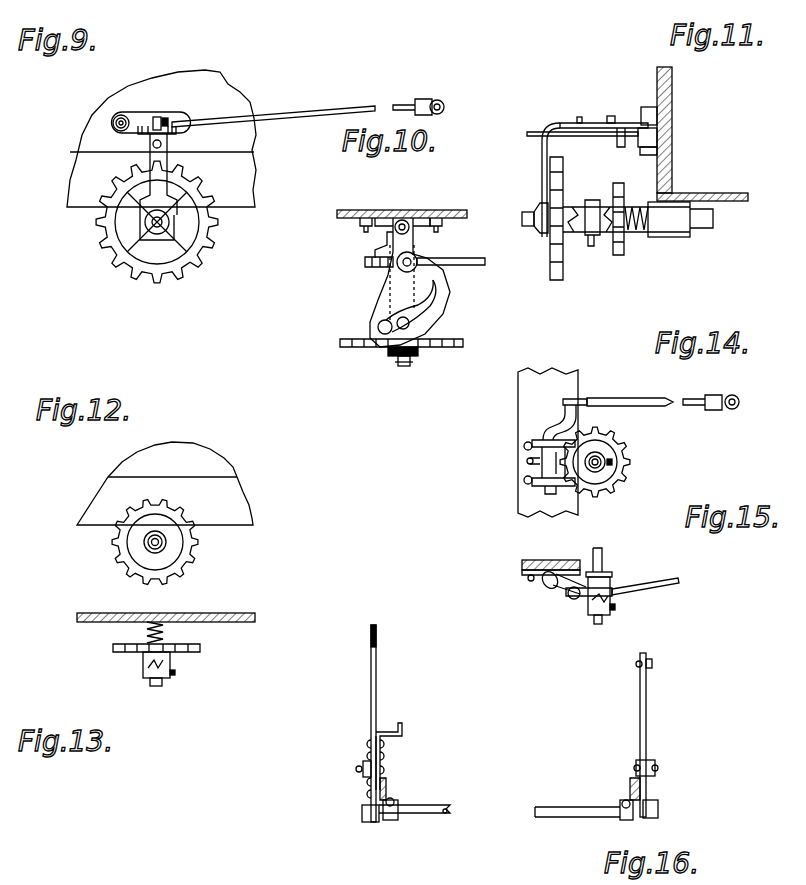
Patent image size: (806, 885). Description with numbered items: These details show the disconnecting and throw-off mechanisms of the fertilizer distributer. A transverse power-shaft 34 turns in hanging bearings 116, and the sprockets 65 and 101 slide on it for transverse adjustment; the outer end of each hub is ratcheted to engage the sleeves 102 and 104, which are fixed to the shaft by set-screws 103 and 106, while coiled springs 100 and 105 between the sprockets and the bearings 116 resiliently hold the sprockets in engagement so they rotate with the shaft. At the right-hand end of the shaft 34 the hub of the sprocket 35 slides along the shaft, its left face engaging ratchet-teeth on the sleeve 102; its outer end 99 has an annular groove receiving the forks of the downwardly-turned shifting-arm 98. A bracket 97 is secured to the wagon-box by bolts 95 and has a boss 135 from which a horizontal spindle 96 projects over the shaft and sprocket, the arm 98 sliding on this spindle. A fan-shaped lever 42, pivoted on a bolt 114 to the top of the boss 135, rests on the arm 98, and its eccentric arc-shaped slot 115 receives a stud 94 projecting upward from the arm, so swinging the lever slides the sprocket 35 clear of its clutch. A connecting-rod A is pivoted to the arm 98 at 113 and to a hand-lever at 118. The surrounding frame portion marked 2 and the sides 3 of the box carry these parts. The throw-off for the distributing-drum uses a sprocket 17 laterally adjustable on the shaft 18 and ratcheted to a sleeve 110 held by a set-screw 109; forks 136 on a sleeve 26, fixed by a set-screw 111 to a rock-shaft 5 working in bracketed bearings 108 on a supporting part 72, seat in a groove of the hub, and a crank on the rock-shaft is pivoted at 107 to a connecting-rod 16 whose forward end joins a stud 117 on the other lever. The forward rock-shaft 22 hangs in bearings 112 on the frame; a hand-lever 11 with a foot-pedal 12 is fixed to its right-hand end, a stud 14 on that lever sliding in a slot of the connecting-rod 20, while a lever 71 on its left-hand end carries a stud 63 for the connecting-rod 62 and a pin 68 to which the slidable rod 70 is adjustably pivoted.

In FIG. 9, the frame plate 2 is at (238, 170).
In FIG. 10, the frame plate 2 is at (344, 208).
In FIG. 11, the frame plate 2 is at (668, 102).
In FIG. 12, the sides 3 is at (213, 486).
In FIG. 13, the sides 3 is at (192, 613).
In FIG. 14, the rock-shaft 5 is at (562, 418).
In FIG. 15, the rock-shaft 5 is at (546, 583).
In FIG. 16, the hand-lever 11 is at (377, 640).
In FIG. 16, the foot-pedal 12 is at (403, 728).
In FIG. 16, the stud 14 is at (362, 770).
In FIG. 14, the connecting-rod 16 is at (636, 400).
In FIG. 15, the connecting-rod 16 is at (662, 585).
In FIG. 14, the sprocket 17 is at (600, 446).
In FIG. 15, the sprocket 17 is at (616, 593).
In FIG. 14, the shaft 18 is at (597, 466).
In FIG. 15, the shaft 18 is at (601, 562).
In FIG. 16, the connecting-rod 20 is at (368, 764).
In FIG. 16, the rock-shaft 22 is at (362, 820).
In FIG. 14, the sleeve 26 is at (545, 465).
In FIG. 9, the power-shaft 34 is at (152, 226).
In FIG. 10, the power-shaft 34 is at (403, 366).
In FIG. 11, the power-shaft 34 is at (527, 210).
In FIG. 12, the power-shaft 34 is at (150, 545).
In FIG. 13, the power-shaft 34 is at (154, 686).
In FIG. 9, the sprocket 35 is at (207, 212).
In FIG. 10, the sprocket 35 is at (455, 346).
In FIG. 11, the sprocket 35 is at (558, 280).
In FIG. 9, the fan-shaped lever 42 is at (148, 140).
In FIG. 10, the fan-shaped lever 42 is at (380, 312).
In FIG. 11, the fan-shaped lever 42 is at (566, 122).
In FIG. 16, the connecting-rod 62 is at (652, 762).
In FIG. 16, the stud 63 is at (657, 770).
In FIG. 12, the sprocket 65 is at (168, 527).
In FIG. 13, the sprocket 65 is at (202, 648).
In FIG. 16, the pin 68 is at (652, 665).
In FIG. 16, the rod 70 is at (648, 662).
In FIG. 16, the lever 71 is at (647, 712).
In FIG. 14, the frame wall 72 is at (548, 369).
In FIG. 15, the frame wall 72 is at (542, 562).
In FIG. 9, the stud 94 is at (157, 118).
In FIG. 10, the stud 94 is at (410, 325).
In FIG. 11, the stud 94 is at (580, 117).
In FIG. 9, the bolts 95 is at (116, 119).
In FIG. 10, the bolts 95 is at (444, 228).
In FIG. 9, the spindle 96 is at (153, 147).
In FIG. 10, the spindle 96 is at (414, 362).
In FIG. 11, the spindle 96 is at (530, 134).
In FIG. 9, the bracket 97 is at (140, 114).
In FIG. 10, the bracket 97 is at (422, 216).
In FIG. 9, the shifting-arm 98 is at (157, 175).
In FIG. 10, the shifting-arm 98 is at (390, 352).
In FIG. 11, the shifting-arm 98 is at (543, 128).
In FIG. 9, the outer end of hub 99 is at (146, 218).
In FIG. 11, the outer end of hub 99 is at (542, 234).
In FIG. 11, the coiled spring 100 is at (640, 234).
In FIG. 9, the sprocket 101 is at (190, 224).
In FIG. 10, the sprocket 101 is at (366, 270).
In FIG. 11, the sprocket 101 is at (622, 255).
In FIG. 11, the sleeve 102 is at (598, 238).
In FIG. 11, the set-screw 103 is at (590, 247).
In FIG. 12, the sleeve 104 is at (163, 544).
In FIG. 13, the sleeve 104 is at (142, 672).
In FIG. 13, the coiled spring 105 is at (166, 632).
In FIG. 13, the set-screw 106 is at (176, 672).
In FIG. 14, the pivot 107 is at (583, 398).
In FIG. 15, the pivot 107 is at (572, 597).
In FIG. 14, the bracketed bearings 108 is at (550, 442).
In FIG. 14, the set-screw 109 is at (612, 461).
In FIG. 15, the set-screw 109 is at (616, 608).
In FIG. 14, the sleeve 110 is at (605, 466).
In FIG. 15, the sleeve 110 is at (603, 619).
In FIG. 14, the set-screw 111 is at (530, 458).
In FIG. 16, the bearings 112 is at (396, 820).
In FIG. 9, the pivot 113 is at (165, 118).
In FIG. 10, the pivot 113 is at (415, 258).
In FIG. 11, the pivot 113 is at (611, 116).
In FIG. 10, the bolt 114 is at (405, 222).
In FIG. 11, the bolt 114 is at (648, 108).
In FIG. 10, the arc-shaped slot 115 is at (436, 292).
In FIG. 11, the hanging bearings 116 is at (672, 226).
In FIG. 14, the stud 117 is at (730, 396).
In FIG. 9, the pivot 118 is at (428, 99).
In FIG. 9, the boss 135 is at (178, 136).
In FIG. 10, the boss 135 is at (386, 240).
In FIG. 11, the boss 135 is at (644, 155).
In FIG. 15, the forks 136 is at (623, 568).
In FIG. 9, the rod A is at (275, 118).
In FIG. 10, the rod A is at (462, 261).
In FIG. 11, the rod A is at (603, 118).